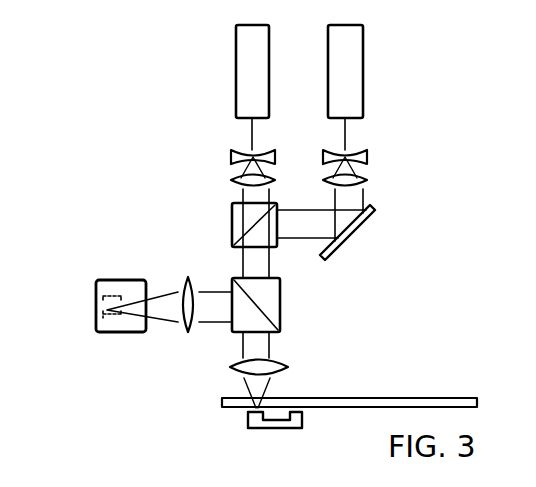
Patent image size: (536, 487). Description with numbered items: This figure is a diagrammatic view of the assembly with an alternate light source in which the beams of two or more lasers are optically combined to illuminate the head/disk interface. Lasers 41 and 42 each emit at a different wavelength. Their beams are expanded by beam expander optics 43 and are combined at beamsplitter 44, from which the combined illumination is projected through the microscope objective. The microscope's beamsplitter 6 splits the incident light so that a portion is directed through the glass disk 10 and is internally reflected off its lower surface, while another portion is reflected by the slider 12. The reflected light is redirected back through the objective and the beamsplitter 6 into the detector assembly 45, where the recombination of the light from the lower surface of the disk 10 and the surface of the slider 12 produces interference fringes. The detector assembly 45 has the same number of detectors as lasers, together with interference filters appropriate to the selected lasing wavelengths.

The laser 41 is at (236, 51).
The laser 42 is at (363, 52).
The beam expander optics 43 is at (225, 149).
The beamsplitter 44 is at (232, 211).
The detector assembly 45 is at (96, 312).
The beamsplitter 6 is at (281, 309).
The glass disk 10 is at (400, 398).
The slider 12 is at (248, 418).